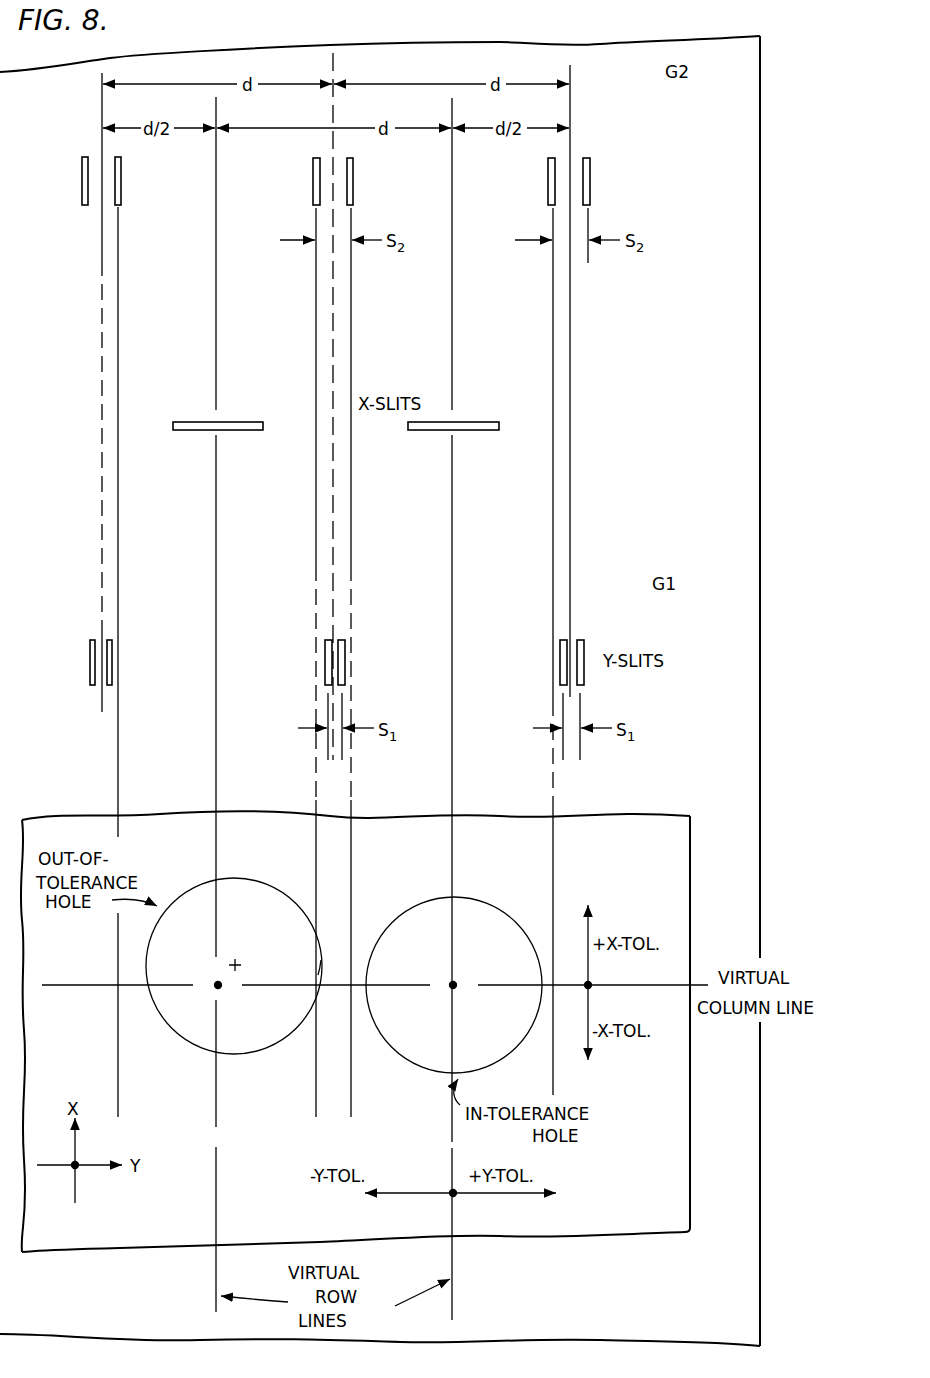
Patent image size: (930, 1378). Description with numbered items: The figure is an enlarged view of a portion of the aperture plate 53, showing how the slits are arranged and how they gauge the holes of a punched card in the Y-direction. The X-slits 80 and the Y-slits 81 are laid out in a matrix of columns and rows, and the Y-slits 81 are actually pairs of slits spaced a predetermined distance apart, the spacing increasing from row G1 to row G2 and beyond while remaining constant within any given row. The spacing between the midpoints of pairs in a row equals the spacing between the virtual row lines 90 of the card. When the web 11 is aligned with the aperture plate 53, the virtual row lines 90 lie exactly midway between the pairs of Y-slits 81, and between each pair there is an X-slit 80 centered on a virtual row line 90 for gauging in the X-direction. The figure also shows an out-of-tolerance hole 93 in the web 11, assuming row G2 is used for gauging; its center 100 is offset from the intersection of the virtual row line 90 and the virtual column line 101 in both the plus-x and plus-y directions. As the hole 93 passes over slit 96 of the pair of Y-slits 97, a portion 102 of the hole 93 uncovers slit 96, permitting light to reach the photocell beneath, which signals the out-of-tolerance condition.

The web 11 is at (672, 1218).
The aperture plate 53 is at (748, 1320).
The X-slit 80 is at (199, 432).
The Y-slits 81 is at (122, 180).
The virtual row line 90 is at (215, 1283).
The out-of-tolerance hole 93 is at (262, 878).
The slit 96 is at (312, 181).
The pair of Y-slits 97 is at (340, 156).
The center of out-of-tolerance hole 100 is at (239, 960).
The virtual column line 101 is at (95, 986).
The portion of hole 102 is at (321, 968).